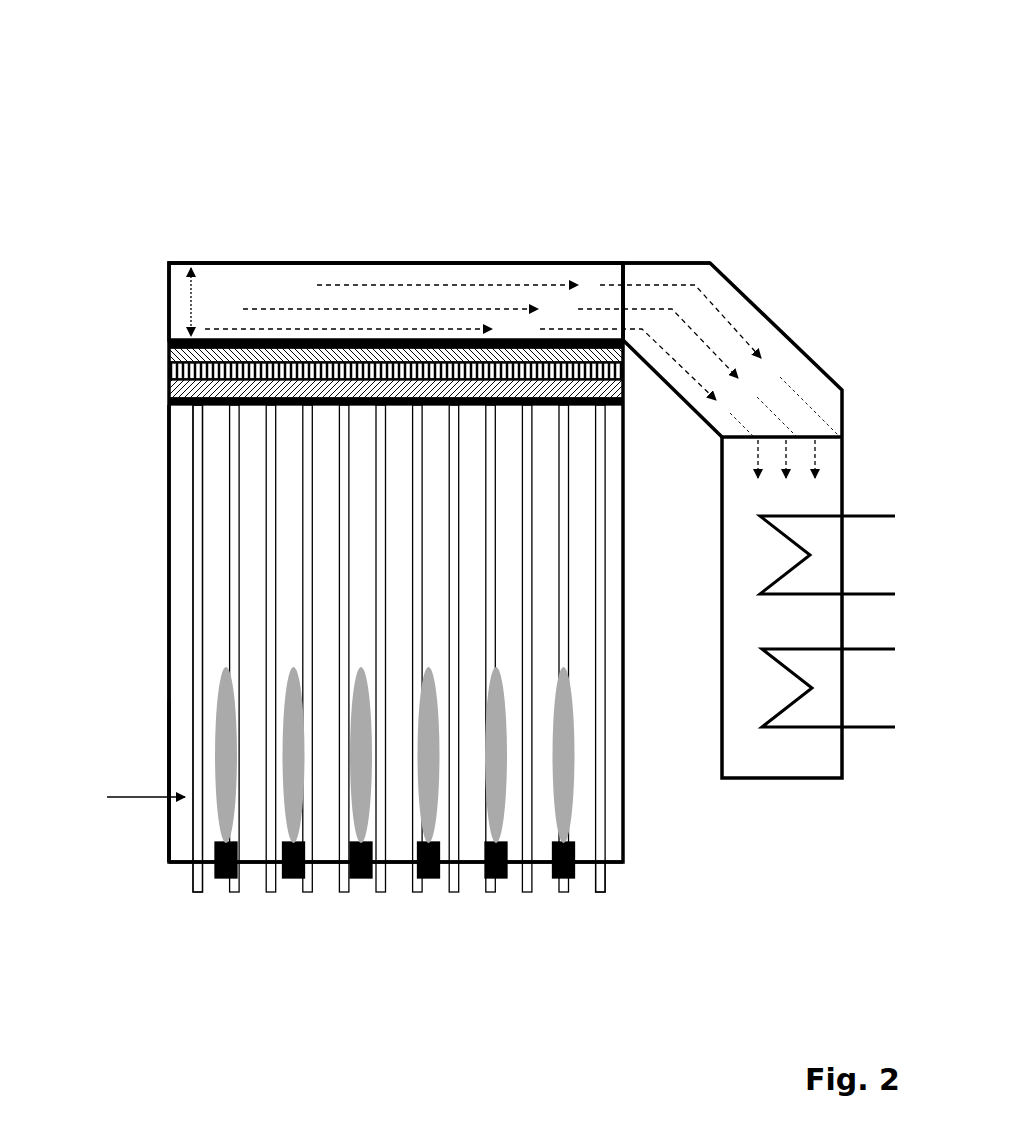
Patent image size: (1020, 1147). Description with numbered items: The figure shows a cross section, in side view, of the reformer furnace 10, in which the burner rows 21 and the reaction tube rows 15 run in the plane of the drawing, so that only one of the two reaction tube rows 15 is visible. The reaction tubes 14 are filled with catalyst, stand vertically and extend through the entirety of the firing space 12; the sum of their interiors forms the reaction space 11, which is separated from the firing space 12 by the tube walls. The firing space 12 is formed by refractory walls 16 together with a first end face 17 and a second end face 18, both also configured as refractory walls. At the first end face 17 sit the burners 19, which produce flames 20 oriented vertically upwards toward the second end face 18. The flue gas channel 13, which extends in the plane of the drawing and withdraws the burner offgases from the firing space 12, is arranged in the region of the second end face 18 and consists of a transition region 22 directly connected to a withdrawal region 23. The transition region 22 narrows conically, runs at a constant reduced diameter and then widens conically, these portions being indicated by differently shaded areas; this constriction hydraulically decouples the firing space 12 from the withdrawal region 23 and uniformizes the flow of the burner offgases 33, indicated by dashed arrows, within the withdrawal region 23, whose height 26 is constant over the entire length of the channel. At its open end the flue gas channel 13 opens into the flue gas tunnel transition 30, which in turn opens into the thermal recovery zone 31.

The reformer furnace 10 is at (125, 132).
The reaction space 11 is at (195, 590).
The firing space 12 is at (178, 687).
The flue gas channel 13 is at (285, 262).
The reaction tubes 14 is at (190, 760).
The reaction tube rows 15 is at (126, 801).
The refractory walls 16 is at (165, 778).
The first end face 17 is at (593, 868).
The second end face 18 is at (580, 405).
The burners 19 is at (500, 878).
The flames 20 is at (563, 730).
The burner rows 21 is at (200, 862).
The transition region 22 is at (155, 343).
The withdrawal region 23 is at (155, 265).
The height 26 is at (190, 295).
The flue gas tunnel transition 30 is at (745, 298).
The thermal recovery zone 31 is at (845, 470).
The burner offgases 33 is at (365, 282).